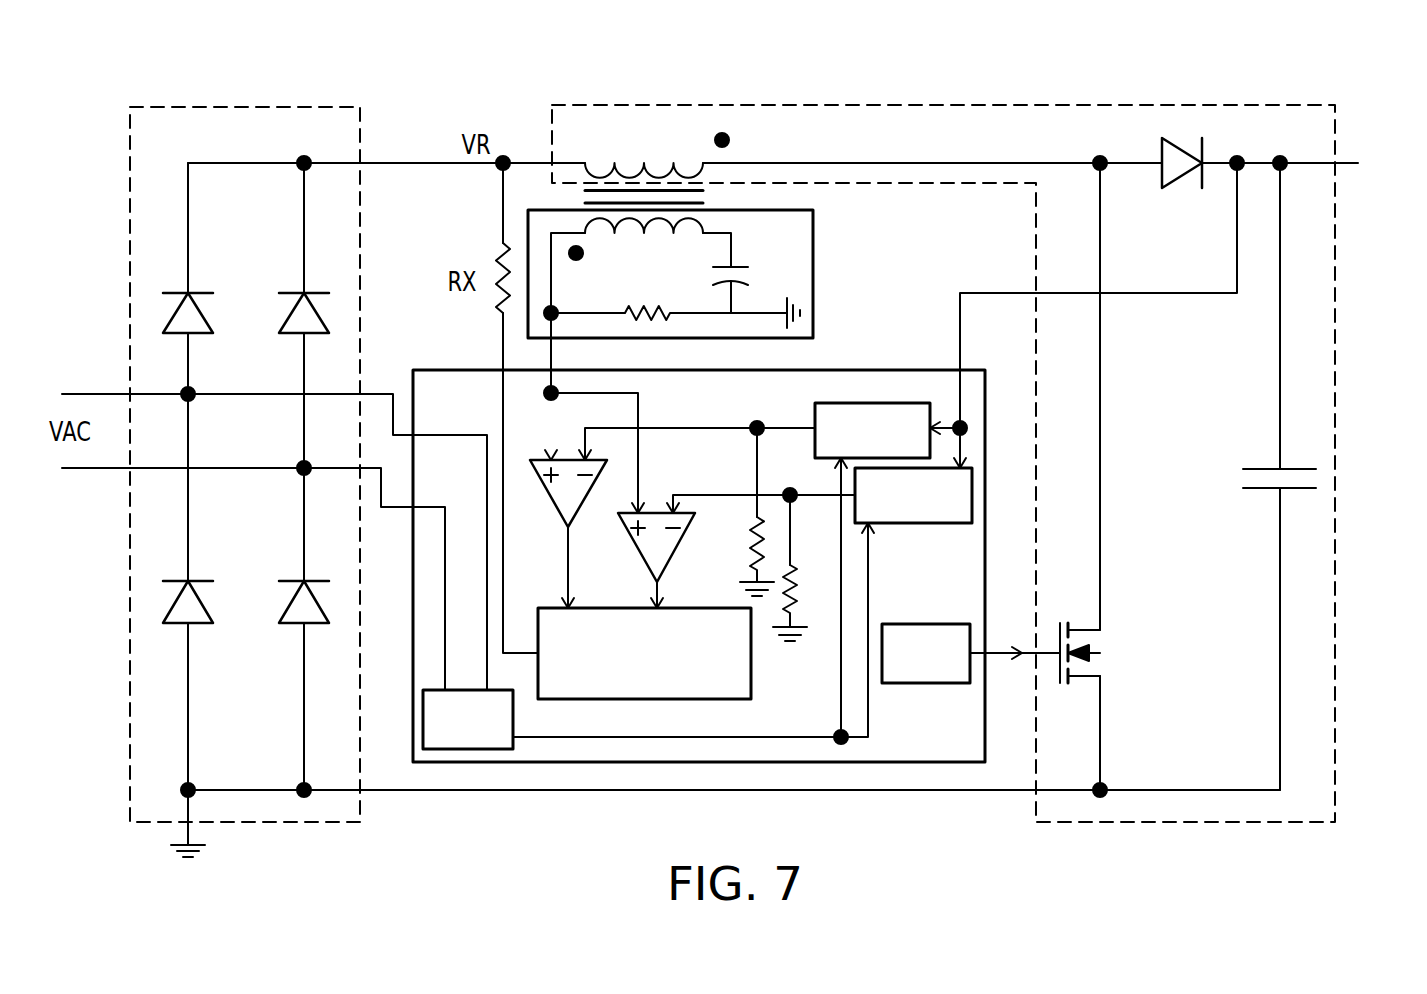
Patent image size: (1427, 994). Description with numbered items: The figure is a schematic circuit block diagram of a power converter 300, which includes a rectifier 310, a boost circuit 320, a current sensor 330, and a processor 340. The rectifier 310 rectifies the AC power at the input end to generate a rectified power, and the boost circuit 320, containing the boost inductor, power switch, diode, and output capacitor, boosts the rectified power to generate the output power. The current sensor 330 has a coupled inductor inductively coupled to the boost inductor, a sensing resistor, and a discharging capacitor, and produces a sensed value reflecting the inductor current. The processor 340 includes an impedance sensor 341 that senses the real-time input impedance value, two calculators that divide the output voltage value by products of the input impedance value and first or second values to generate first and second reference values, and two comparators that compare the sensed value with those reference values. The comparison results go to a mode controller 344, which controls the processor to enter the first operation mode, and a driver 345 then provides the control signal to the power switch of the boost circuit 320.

The power converter 300 is at (1368, 850).
The rectifier 310 is at (244, 107).
The boost circuit 320 is at (1066, 107).
The current sensor 330 is at (815, 253).
The processor 340 is at (736, 537).
The impedance sensor 341 is at (514, 720).
The mode controller 344 is at (645, 700).
The driver 345 is at (930, 685).